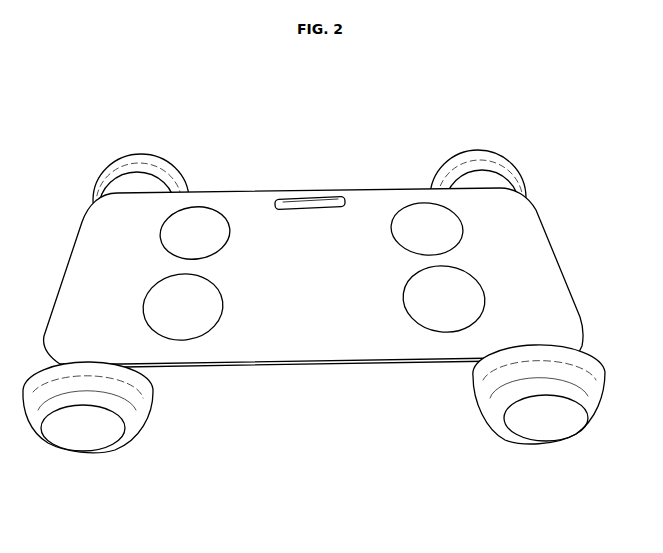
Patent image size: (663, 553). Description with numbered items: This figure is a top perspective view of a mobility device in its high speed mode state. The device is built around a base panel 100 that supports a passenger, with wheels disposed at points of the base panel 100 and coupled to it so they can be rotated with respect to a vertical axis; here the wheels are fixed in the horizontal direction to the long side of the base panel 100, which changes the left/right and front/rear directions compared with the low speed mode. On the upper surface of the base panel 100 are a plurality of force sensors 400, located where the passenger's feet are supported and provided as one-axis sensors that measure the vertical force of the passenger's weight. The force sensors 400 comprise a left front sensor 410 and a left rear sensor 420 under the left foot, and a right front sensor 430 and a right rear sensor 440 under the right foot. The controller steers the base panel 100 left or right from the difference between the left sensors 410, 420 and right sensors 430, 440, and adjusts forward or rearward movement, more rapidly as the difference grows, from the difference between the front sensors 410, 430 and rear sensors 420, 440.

The base panel 100 is at (527, 218).
The force sensor 400 is at (316, 172).
The left front sensor 410 is at (197, 228).
The left rear sensor 420 is at (182, 322).
The right front sensor 430 is at (420, 225).
The right rear sensor 440 is at (440, 318).